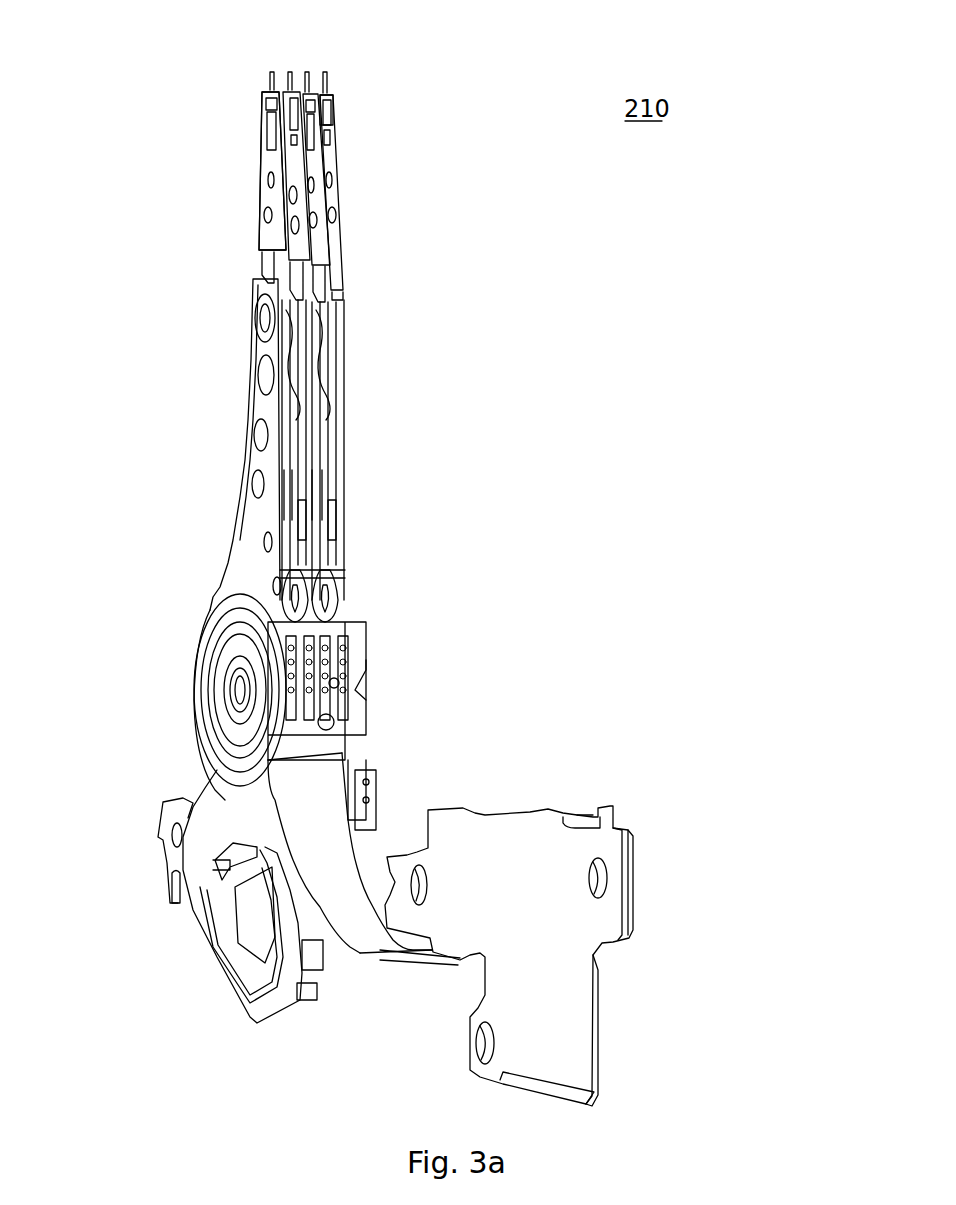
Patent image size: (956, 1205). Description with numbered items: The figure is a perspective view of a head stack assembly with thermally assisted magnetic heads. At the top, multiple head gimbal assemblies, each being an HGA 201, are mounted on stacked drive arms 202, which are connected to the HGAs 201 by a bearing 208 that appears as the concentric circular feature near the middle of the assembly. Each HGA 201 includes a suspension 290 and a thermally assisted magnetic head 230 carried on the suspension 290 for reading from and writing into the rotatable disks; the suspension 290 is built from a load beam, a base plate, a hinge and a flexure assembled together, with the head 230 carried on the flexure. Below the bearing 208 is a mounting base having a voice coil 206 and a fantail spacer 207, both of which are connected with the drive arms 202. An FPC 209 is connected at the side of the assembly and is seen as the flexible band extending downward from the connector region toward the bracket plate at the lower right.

The head gimbal assembly (HGA) 201 is at (362, 189).
The thermally assisted magnetic head 230 is at (323, 113).
The suspension 290 is at (262, 228).
The drive arm 202 is at (258, 400).
The bearing 208 is at (243, 688).
The fantail spacer 207 is at (165, 817).
The voice coil 206 is at (220, 942).
The FPC (flexible printed circuit) 209 is at (362, 918).